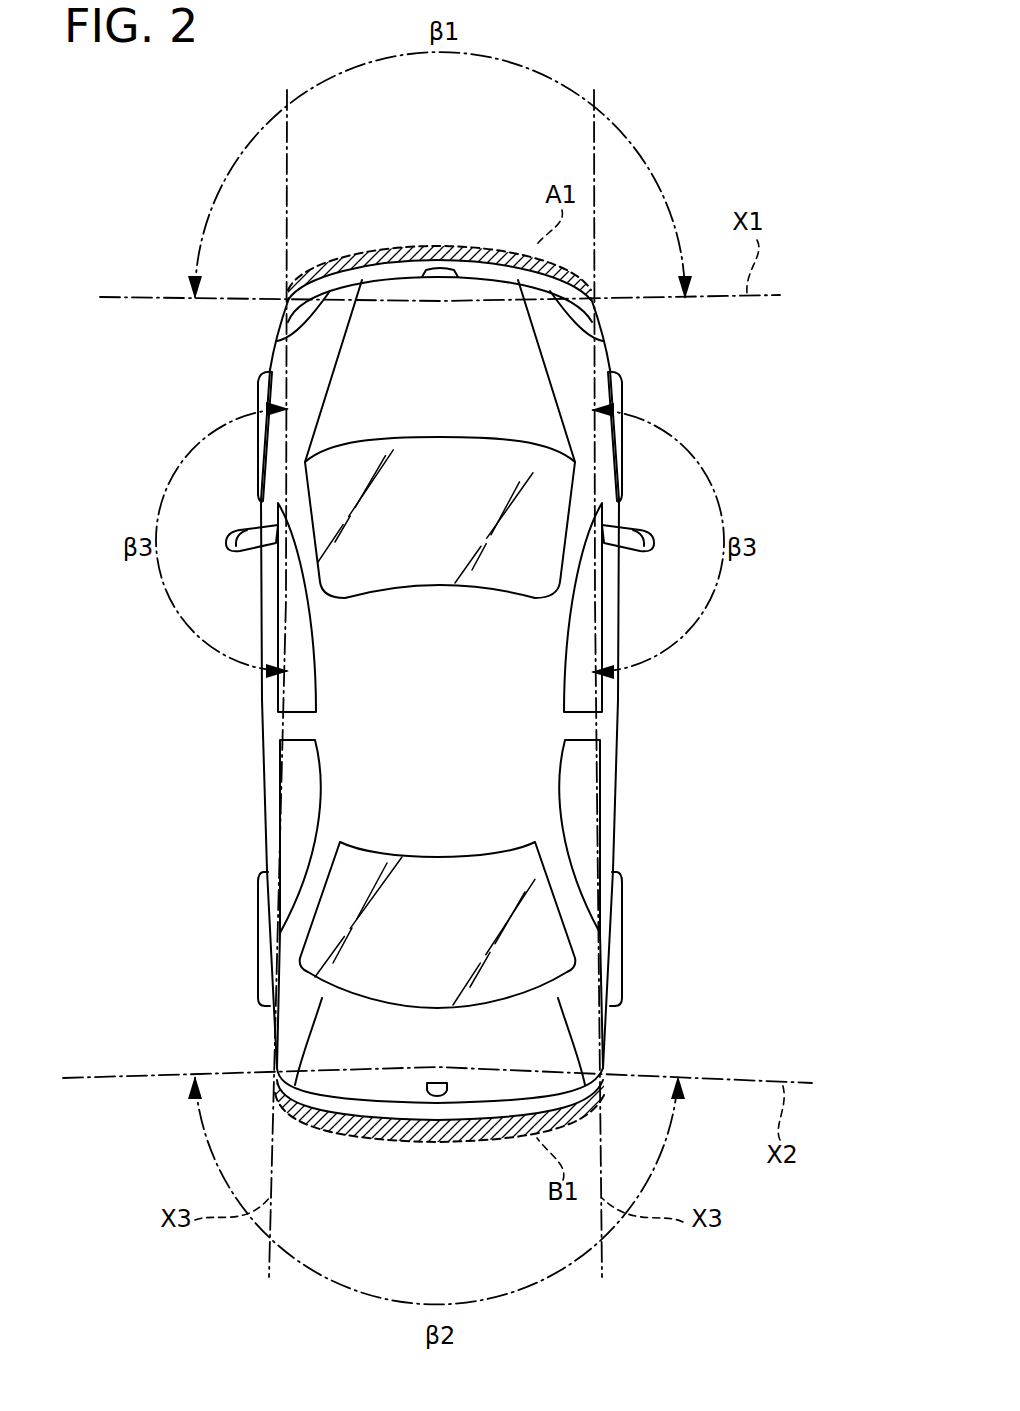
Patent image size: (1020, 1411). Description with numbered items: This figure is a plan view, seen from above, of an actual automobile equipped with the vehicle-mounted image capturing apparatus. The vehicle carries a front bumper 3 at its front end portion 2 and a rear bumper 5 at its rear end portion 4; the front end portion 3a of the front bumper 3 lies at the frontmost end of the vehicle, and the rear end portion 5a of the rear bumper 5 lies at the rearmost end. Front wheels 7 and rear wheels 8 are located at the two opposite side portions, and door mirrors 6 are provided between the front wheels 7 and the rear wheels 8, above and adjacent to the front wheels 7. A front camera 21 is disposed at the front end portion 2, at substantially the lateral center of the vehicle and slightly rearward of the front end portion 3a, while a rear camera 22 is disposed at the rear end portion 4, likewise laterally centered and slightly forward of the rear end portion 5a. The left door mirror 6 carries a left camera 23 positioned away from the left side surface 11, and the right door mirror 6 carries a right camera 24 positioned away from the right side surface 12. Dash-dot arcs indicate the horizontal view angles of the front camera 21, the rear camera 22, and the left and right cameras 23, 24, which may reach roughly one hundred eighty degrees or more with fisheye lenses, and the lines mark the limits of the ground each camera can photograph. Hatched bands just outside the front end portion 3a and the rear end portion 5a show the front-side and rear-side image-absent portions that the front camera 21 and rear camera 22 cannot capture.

The front end portion 2 is at (440, 287).
The front bumper 3 is at (365, 273).
The front end portion of the front bumper 3a is at (413, 257).
The rear end portion 4 is at (373, 1083).
The rear bumper 5 is at (497, 1110).
The rear end portion of the rear bumper 5a is at (423, 1147).
The door mirror 6 is at (237, 560).
The front wheel 7 is at (270, 392).
The rear wheel 8 is at (257, 950).
The left side surface 11 is at (258, 730).
The right side surface 12 is at (620, 730).
The front camera 21 is at (443, 270).
The rear camera 22 is at (440, 1080).
The left camera 23 is at (240, 527).
The right camera 24 is at (640, 527).